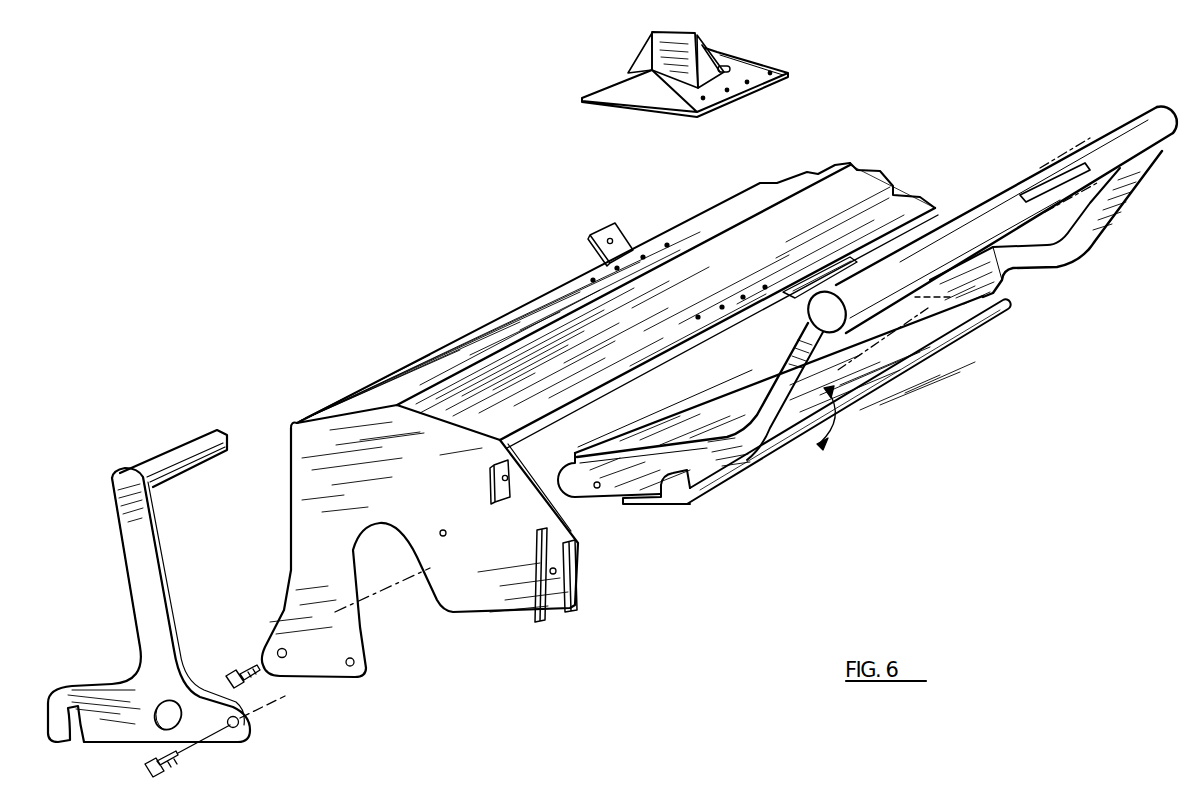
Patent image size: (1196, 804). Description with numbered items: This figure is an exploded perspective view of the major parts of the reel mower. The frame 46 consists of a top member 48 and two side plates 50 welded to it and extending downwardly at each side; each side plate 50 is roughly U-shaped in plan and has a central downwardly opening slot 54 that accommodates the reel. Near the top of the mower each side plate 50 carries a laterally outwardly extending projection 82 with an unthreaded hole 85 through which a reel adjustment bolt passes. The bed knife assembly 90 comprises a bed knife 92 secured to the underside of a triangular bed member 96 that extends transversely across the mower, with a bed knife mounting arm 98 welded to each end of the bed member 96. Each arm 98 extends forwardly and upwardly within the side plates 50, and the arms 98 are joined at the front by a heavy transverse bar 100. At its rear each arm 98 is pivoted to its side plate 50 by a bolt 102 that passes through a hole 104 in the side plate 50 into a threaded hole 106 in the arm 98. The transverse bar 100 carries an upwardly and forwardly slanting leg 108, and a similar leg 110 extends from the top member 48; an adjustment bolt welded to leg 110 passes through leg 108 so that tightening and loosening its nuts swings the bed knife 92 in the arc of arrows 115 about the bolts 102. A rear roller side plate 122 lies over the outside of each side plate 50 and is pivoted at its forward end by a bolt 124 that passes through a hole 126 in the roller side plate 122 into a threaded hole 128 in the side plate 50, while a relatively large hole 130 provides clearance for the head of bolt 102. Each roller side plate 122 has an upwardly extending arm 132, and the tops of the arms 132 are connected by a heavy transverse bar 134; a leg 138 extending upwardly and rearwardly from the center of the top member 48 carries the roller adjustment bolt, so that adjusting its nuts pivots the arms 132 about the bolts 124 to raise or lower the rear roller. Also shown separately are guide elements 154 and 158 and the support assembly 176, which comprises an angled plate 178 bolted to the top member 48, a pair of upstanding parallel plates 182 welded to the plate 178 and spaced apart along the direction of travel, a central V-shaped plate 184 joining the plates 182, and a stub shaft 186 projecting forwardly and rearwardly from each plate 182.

The frame 46 is at (486, 311).
The top member 48 is at (893, 192).
The side plate 50 is at (315, 441).
The slot 54 is at (425, 615).
The projection 82 is at (492, 486).
The unthreaded hole 85 is at (508, 478).
The bed knife assembly 90 is at (752, 482).
The bed knife 92 is at (708, 494).
The bed member 96 is at (660, 424).
The bed knife mounting arm 98 is at (698, 460).
The transverse bar 100 is at (992, 212).
The bolt 102 is at (236, 674).
The hole 104 is at (286, 651).
The threaded hole 106 is at (599, 489).
The leg 108 is at (1060, 172).
The leg 110 is at (824, 274).
The arrows 115 is at (838, 428).
The rear roller side plate 122 is at (106, 673).
The bolt 124 is at (172, 768).
The hole 126 is at (240, 727).
The threaded hole 128 is at (353, 666).
The hole 130 is at (170, 703).
The arm 132 is at (130, 558).
The transverse bar 134 is at (165, 455).
The leg 138 is at (601, 226).
The guide bars 154 is at (566, 613).
The hole 158 is at (557, 572).
The support assembly 176 is at (800, 62).
The angled plate 178 is at (663, 102).
The upstanding parallel plates 182 is at (718, 52).
The V-shaped plate 184 is at (660, 40).
The stub shaft 186 is at (630, 62).